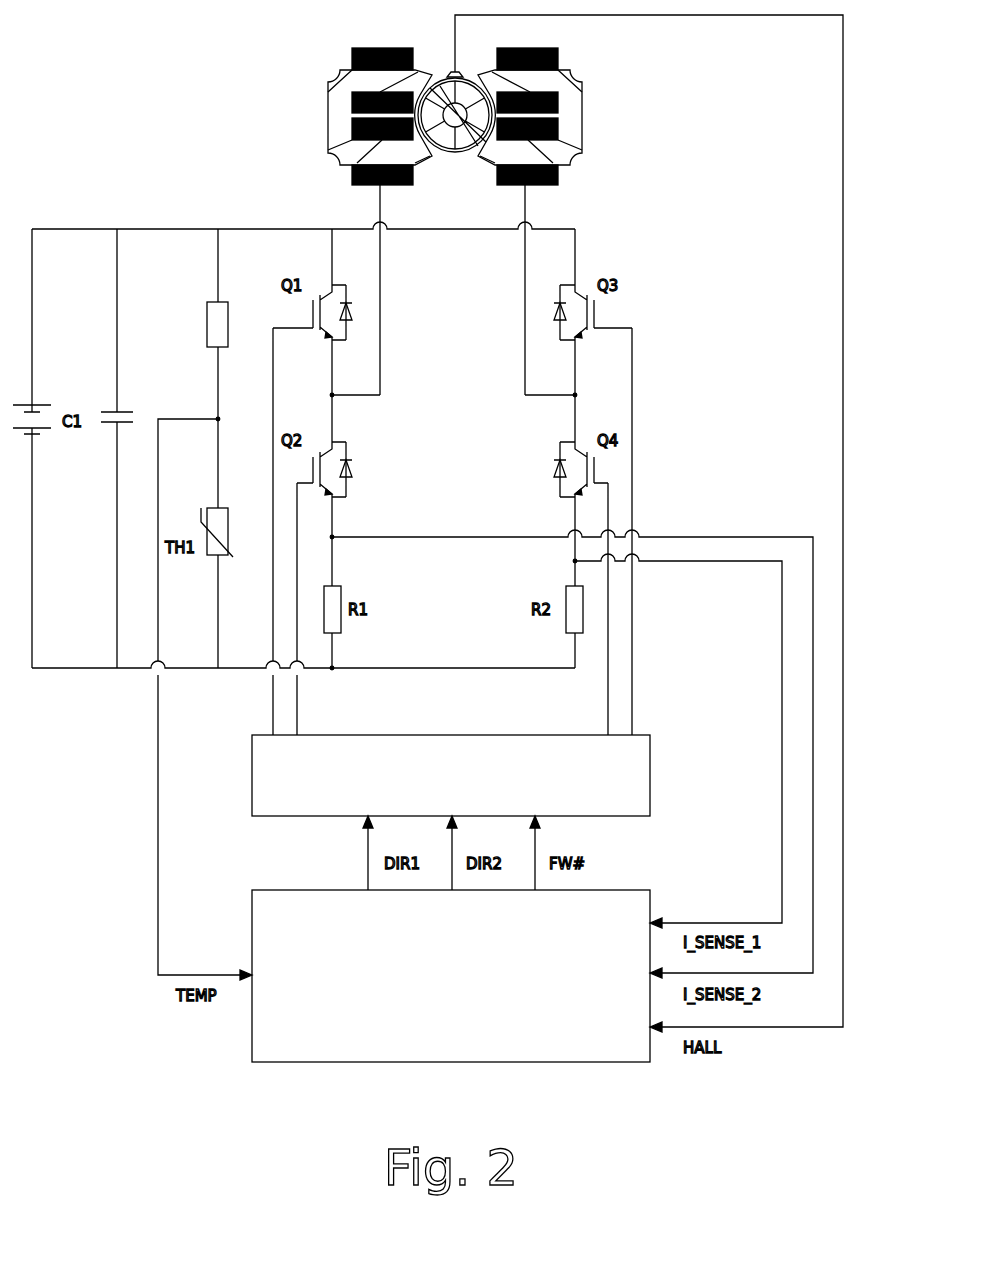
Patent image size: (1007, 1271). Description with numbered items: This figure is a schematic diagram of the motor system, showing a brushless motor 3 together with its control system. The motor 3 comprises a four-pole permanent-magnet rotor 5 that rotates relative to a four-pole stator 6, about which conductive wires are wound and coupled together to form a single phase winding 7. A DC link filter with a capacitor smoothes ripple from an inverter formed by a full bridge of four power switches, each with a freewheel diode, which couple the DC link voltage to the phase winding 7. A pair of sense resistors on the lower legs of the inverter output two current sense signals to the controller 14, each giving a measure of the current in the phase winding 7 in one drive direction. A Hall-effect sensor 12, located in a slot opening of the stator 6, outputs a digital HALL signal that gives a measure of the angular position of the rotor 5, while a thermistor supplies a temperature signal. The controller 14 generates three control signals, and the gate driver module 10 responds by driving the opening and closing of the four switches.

The brushless motor 3 is at (559, 519).
The rotor 5 is at (455, 152).
The stator 6 is at (328, 108).
The phase winding 7 is at (376, 48).
The gate driver module 10 is at (252, 775).
The Hall-effect sensor 12 is at (452, 76).
The controller 14 is at (252, 915).